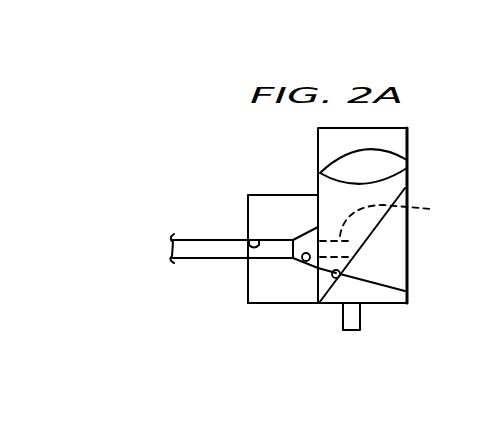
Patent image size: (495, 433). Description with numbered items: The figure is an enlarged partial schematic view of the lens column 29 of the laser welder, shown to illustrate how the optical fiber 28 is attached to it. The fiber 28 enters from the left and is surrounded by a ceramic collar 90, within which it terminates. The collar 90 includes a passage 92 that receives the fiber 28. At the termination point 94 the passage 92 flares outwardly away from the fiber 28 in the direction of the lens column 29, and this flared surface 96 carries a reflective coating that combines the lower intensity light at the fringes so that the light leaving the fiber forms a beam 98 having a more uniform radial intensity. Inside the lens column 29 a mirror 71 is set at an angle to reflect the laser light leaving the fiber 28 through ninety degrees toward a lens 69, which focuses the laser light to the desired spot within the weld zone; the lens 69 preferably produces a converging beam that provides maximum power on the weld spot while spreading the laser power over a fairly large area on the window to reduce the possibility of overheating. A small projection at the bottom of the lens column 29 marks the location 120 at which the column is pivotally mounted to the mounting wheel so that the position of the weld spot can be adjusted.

The optical fiber 28 is at (188, 247).
The lens column 29 is at (407, 240).
The lens 69 is at (407, 163).
The mirror 71 is at (407, 290).
The ceramic collar 90 is at (283, 207).
The passage 92 is at (242, 237).
The termination point 94 is at (292, 261).
The flared surface 96 is at (305, 262).
The beam 98 is at (402, 219).
The pivot mounting 120 is at (360, 320).